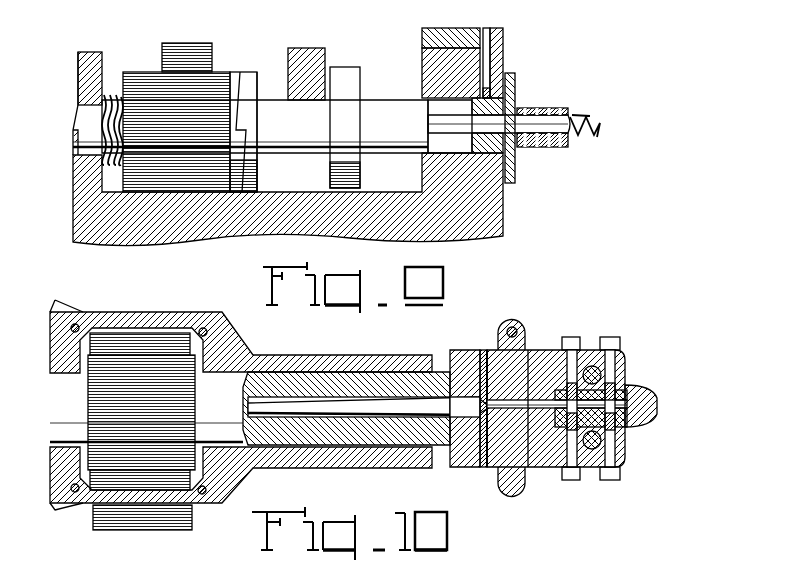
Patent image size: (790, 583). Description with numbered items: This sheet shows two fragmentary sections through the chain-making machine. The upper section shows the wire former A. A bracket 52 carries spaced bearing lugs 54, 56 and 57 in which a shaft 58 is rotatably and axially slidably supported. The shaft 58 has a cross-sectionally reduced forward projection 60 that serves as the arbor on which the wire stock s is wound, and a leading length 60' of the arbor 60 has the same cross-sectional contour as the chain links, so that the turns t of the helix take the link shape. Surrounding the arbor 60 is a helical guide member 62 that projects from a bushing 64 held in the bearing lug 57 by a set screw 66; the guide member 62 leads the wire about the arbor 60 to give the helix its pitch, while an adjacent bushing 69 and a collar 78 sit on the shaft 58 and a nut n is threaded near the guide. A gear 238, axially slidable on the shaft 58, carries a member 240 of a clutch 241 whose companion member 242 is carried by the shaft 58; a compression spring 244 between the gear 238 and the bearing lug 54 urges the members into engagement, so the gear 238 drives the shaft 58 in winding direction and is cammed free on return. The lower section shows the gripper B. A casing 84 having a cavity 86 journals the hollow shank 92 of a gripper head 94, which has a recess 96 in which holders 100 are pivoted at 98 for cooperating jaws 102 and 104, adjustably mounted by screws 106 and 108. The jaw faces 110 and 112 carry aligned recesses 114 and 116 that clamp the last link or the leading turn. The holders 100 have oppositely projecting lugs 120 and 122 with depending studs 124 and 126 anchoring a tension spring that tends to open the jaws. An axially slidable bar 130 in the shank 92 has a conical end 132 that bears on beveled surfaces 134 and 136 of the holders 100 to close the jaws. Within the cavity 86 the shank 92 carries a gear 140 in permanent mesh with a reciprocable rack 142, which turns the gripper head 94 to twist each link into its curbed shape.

In FIG. 9, the bracket 52 is at (75, 203).
In FIG. 9, the bearing lug 54 is at (92, 58).
In FIG. 9, the bearing lug 56 is at (310, 57).
In FIG. 9, the bearing lug 57 is at (437, 70).
In FIG. 9, the shaft 58 is at (378, 108).
In FIG. 9, the forward projection 60 is at (499, 127).
In FIG. 9, the leading length 60' is at (583, 114).
In FIG. 9, the helical guide member 62 is at (556, 148).
In FIG. 9, the bushing 64 is at (514, 165).
In FIG. 9, the set screw 66 is at (491, 66).
In FIG. 9, the bushing 69 is at (507, 90).
In FIG. 9, the disc 78 is at (346, 78).
In FIG. 9, the gear 238 is at (138, 80).
In FIG. 9, the clutch member 240 is at (233, 75).
In FIG. 9, the clutch 241 is at (257, 53).
In FIG. 9, the companion clutch member 242 is at (250, 90).
In FIG. 9, the compression spring 244 is at (112, 95).
In FIG. 9, the wire stock s is at (526, 108).
In FIG. 9, the nut n is at (545, 108).
In FIG. 9, the turns t is at (547, 148).
In FIG. 9, the wire former A is at (568, 100).
In FIG. 10, the casing 84 is at (206, 304).
In FIG. 10, the cavity 86 is at (120, 335).
In FIG. 10, the hollow shank 92 is at (357, 385).
In FIG. 10, the gripper head 94 is at (463, 468).
In FIG. 10, the recess 96 is at (485, 470).
In FIG. 10, the pivot 98 is at (592, 366).
In FIG. 10, the holders 100 is at (540, 352).
In FIG. 10, the jaw 102 is at (634, 428).
In FIG. 10, the jaw 104 is at (645, 390).
In FIG. 10, the screw 106 is at (571, 480).
In FIG. 10, the screw 108 is at (571, 337).
In FIG. 10, the face 110 is at (628, 440).
In FIG. 10, the face 112 is at (632, 395).
In FIG. 10, the recess 114 is at (651, 420).
In FIG. 10, the recess 116 is at (658, 398).
In FIG. 10, the lug 120 is at (513, 492).
In FIG. 10, the lug 122 is at (520, 330).
In FIG. 10, the stud 124 is at (545, 470).
In FIG. 10, the stud 126 is at (511, 326).
In FIG. 10, the axially slidable bar 130 is at (428, 402).
In FIG. 10, the conical end 132 is at (480, 402).
In FIG. 10, the beveled surface 134 is at (529, 352).
In FIG. 10, the beveled surface 136 is at (484, 350).
In FIG. 10, the gear 140 is at (102, 447).
In FIG. 10, the rack 142 is at (180, 515).
In FIG. 10, the gripper B is at (646, 363).